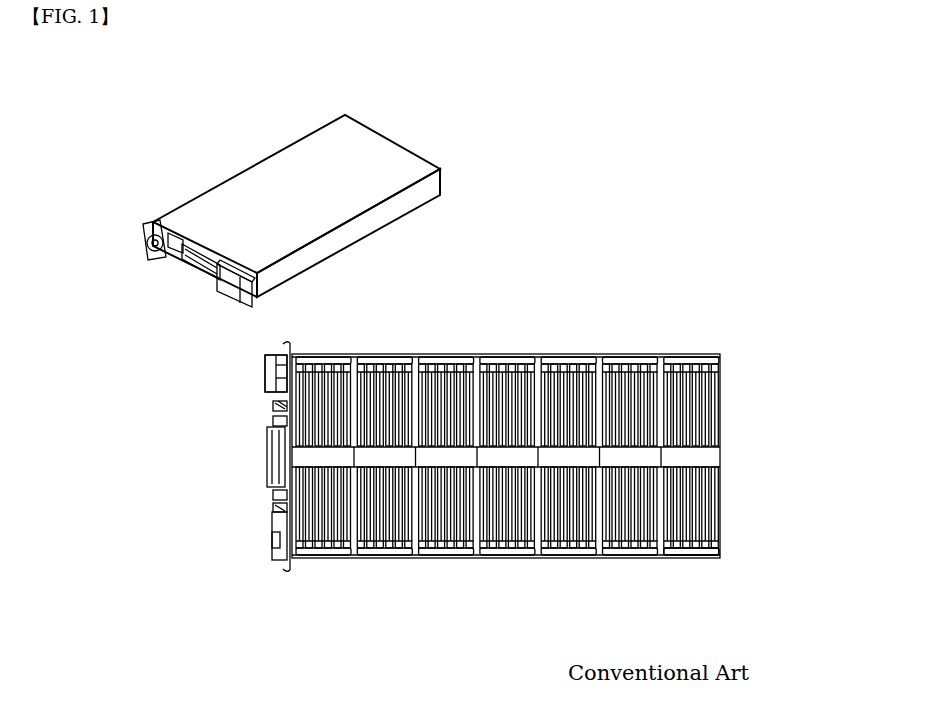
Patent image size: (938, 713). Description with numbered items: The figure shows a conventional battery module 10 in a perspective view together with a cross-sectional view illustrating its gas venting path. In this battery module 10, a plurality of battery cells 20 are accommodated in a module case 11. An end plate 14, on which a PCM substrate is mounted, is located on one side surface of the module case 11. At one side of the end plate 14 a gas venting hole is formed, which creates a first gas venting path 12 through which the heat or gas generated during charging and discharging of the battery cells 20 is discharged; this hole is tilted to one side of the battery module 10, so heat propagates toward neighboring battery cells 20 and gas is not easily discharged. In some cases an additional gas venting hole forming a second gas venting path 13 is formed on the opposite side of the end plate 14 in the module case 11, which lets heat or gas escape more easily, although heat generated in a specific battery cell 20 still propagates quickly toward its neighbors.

The battery module 10 is at (142, 114).
The module case 11 is at (490, 352).
The first gas venting path 12 is at (256, 379).
The second gas venting path 13 is at (738, 551).
The end plate 14 is at (267, 472).
The battery cells 20 is at (698, 400).